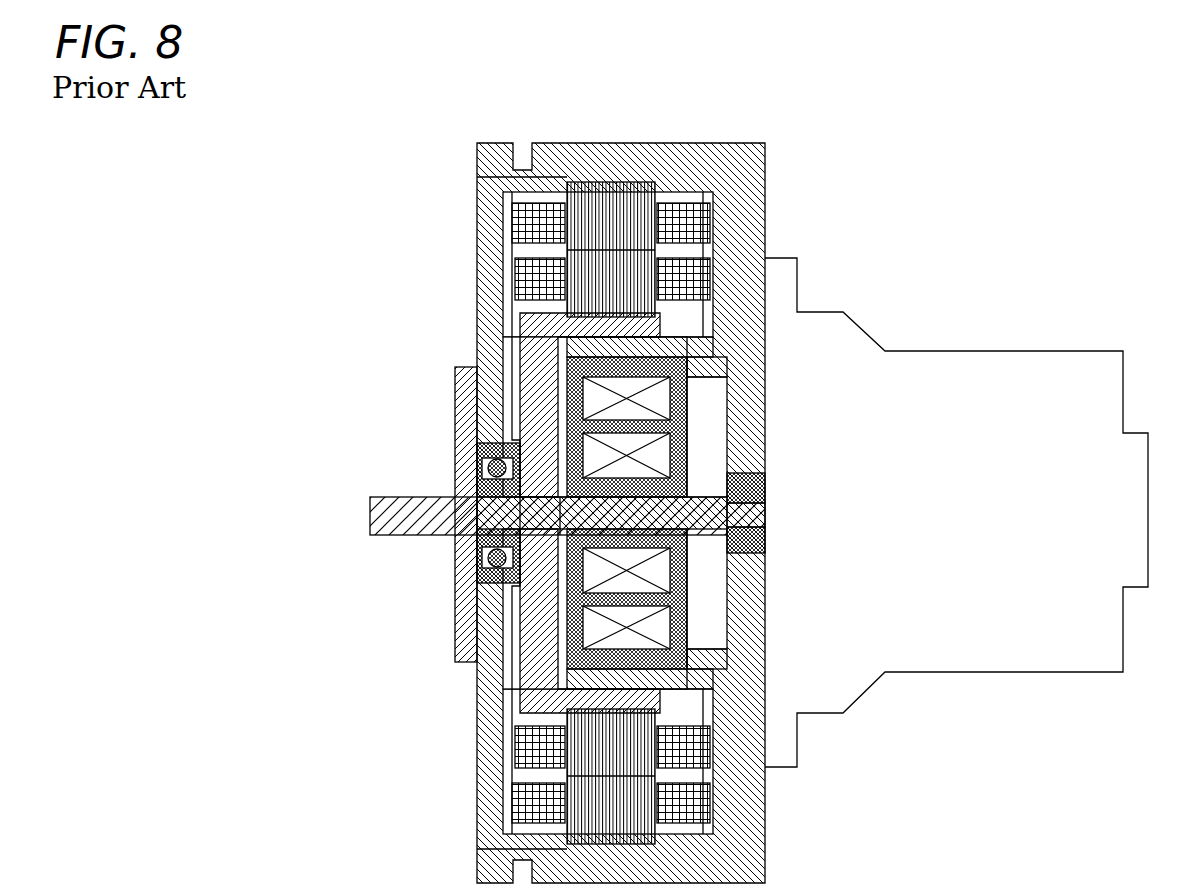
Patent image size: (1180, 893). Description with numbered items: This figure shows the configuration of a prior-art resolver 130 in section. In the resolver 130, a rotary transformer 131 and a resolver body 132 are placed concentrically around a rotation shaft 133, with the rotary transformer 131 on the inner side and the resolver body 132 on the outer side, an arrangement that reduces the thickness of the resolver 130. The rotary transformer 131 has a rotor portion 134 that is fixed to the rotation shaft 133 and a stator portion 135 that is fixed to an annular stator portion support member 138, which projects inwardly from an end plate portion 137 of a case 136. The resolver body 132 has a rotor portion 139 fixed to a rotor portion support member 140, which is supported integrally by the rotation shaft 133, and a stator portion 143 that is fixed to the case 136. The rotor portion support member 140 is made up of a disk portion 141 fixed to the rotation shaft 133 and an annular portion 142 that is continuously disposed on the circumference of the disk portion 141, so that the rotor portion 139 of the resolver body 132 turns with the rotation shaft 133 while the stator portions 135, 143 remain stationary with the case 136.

The resolver 130 is at (400, 151).
The rotary transformer 131 is at (925, 207).
The resolver body 132 is at (925, 118).
The rotation shaft 133 is at (398, 495).
The rotor portion 134 is at (690, 462).
The stator portion 135 is at (690, 398).
The case 136 is at (548, 142).
The end plate portion 137 is at (767, 613).
The stator portion support member 138 is at (677, 685).
The rotor portion 139 is at (713, 275).
The rotor portion support member 140 is at (348, 703).
The disk portion 141 is at (535, 688).
The annular portion 142 is at (513, 750).
The stator portion 143 is at (713, 227).